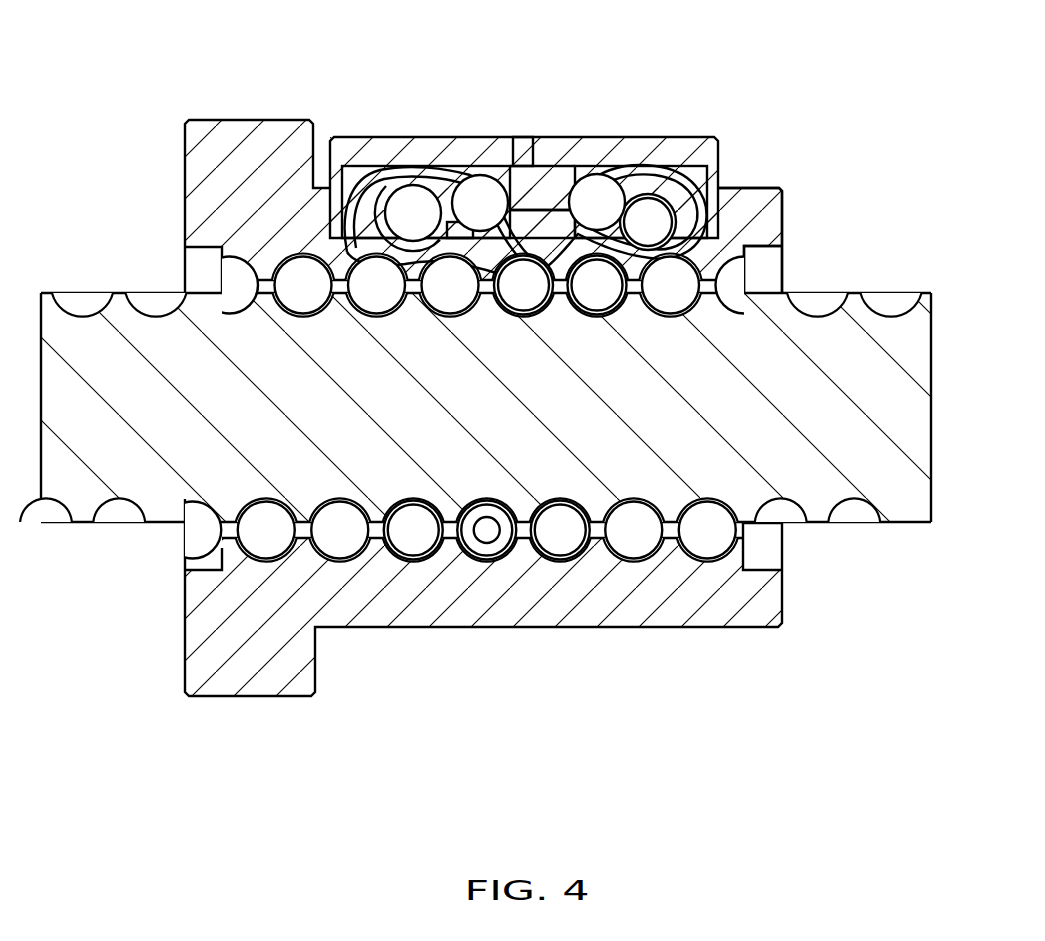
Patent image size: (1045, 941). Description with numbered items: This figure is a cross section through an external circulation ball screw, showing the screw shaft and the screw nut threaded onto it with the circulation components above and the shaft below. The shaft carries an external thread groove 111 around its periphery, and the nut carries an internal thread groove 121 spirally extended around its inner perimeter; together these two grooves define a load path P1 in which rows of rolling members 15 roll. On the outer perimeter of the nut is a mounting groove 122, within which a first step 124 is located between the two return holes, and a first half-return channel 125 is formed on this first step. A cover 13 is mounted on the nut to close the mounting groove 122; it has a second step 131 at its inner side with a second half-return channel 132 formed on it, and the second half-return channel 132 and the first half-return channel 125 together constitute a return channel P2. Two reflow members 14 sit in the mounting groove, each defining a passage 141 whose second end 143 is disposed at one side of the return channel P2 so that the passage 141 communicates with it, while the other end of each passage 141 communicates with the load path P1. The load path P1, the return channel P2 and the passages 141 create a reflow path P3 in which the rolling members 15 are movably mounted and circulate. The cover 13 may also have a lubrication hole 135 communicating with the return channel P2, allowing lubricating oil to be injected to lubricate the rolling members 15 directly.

The cover 13 is at (625, 135).
The reflow member 14 is at (373, 180).
The rolling member 15 is at (417, 207).
The external thread groove 111 is at (622, 262).
The internal thread groove 121 is at (518, 222).
The mounting groove 122 is at (728, 212).
The first step 124 is at (443, 228).
The first half-return channel 125 is at (478, 240).
The second step 131 is at (548, 183).
The second half-return channel 132 is at (547, 195).
The lubrication hole 135 is at (523, 160).
The passage 141 is at (383, 233).
The second end 143 is at (456, 170).
The load path P1 is at (570, 700).
The return channel P2 is at (447, 700).
The reflow path P3 is at (477, 760).